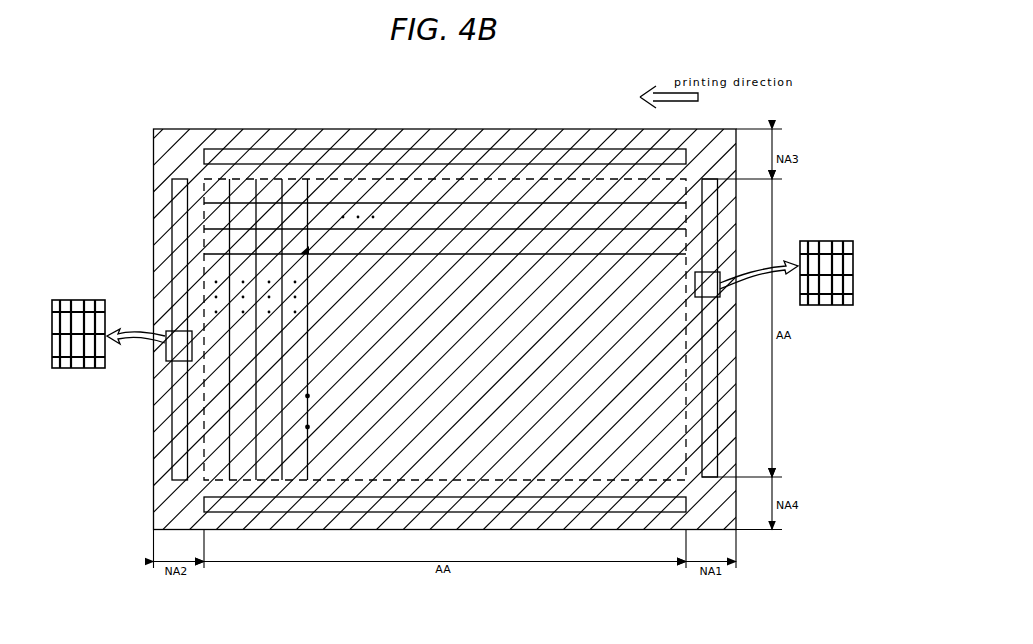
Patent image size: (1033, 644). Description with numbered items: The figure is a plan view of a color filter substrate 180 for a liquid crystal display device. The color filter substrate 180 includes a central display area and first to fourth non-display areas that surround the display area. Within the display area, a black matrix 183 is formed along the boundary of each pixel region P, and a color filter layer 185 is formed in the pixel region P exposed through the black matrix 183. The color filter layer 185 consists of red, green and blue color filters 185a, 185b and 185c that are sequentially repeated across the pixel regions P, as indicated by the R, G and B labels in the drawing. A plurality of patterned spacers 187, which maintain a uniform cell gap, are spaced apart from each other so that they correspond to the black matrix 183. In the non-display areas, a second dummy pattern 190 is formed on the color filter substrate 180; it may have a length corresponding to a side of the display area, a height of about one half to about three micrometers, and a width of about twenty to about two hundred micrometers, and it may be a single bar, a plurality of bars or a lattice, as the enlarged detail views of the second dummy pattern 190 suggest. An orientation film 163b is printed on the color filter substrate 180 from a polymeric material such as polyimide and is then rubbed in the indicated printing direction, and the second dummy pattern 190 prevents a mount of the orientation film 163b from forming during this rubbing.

The color filter substrate 180 is at (560, 101).
The second dummy pattern 190 is at (493, 156).
The orientation film 163b is at (168, 488).
The color filter layer 185 is at (325, 98).
The red color filter 185a is at (245, 204).
The green color filter 185b is at (268, 208).
The blue color filter 185c is at (297, 207).
The black matrix 183 is at (309, 310).
The patterned spacers 187 is at (310, 427).
The pixel region P is at (311, 257).